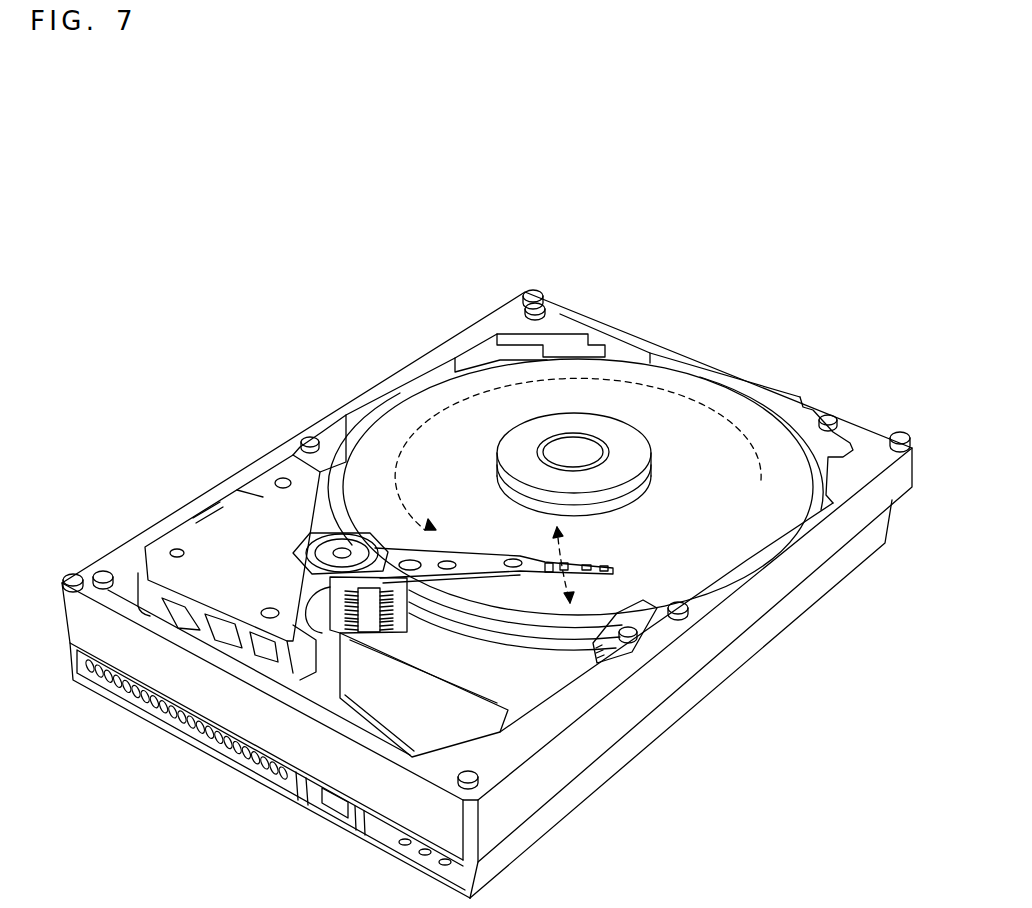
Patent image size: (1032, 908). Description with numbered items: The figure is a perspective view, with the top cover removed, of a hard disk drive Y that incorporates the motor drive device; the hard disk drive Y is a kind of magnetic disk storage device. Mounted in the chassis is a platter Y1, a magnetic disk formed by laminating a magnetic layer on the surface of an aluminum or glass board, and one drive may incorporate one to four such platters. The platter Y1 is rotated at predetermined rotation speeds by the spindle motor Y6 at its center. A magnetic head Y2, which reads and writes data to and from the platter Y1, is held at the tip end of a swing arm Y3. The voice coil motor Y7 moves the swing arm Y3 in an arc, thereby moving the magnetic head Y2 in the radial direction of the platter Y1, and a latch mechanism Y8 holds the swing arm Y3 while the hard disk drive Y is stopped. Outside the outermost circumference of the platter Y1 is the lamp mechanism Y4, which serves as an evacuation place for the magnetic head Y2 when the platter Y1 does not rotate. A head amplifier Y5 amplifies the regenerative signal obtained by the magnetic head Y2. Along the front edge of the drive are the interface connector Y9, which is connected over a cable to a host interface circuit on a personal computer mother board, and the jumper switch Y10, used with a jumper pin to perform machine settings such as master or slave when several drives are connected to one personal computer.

The hard disk drive Y is at (167, 259).
The platter Y1 is at (732, 404).
The magnetic head Y2 is at (613, 566).
The swing arm Y3 is at (480, 560).
The lamp mechanism Y4 is at (597, 642).
The head amplifier Y5 is at (370, 612).
The spindle motor Y6 is at (508, 454).
The voice coil motor Y7 is at (222, 543).
The latch mechanism Y8 is at (178, 623).
The interface connector Y9 is at (182, 730).
The jumper switch Y10 is at (340, 812).